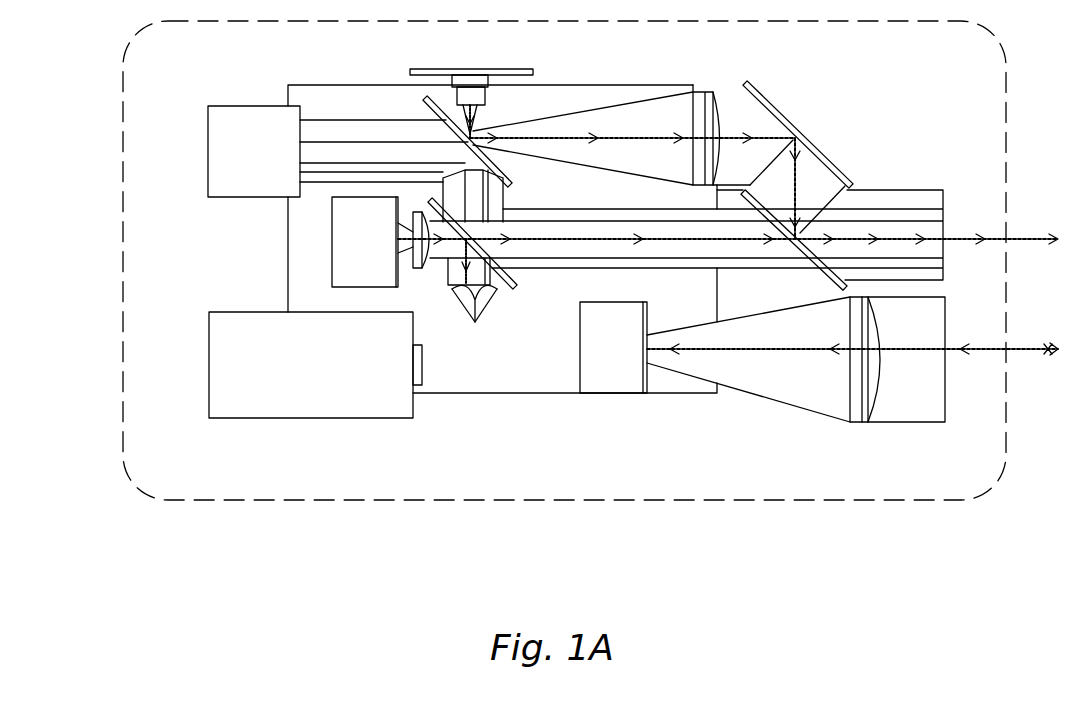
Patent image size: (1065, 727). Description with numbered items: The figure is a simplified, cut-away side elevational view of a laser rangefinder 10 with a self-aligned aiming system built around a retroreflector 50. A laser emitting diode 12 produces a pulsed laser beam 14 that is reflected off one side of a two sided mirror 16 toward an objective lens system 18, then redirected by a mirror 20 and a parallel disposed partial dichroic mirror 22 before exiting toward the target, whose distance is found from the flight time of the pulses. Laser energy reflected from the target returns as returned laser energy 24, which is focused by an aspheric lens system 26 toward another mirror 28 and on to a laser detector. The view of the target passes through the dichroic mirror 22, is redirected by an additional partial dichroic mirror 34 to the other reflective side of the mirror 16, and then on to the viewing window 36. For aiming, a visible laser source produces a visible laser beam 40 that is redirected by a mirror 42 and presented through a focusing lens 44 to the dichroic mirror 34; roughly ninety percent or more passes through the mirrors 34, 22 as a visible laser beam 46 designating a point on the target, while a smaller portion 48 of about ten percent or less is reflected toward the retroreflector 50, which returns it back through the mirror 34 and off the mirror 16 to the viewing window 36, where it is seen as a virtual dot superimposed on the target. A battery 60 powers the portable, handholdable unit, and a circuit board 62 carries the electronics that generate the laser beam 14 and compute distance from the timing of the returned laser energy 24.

The laser rangefinder 10 is at (243, 502).
The laser emitting diode 12 is at (488, 95).
The laser beam 14 is at (476, 125).
The two sided mirror 16 is at (512, 178).
The objective lens system 18 is at (712, 92).
The mirror 20 is at (818, 150).
The partial dichroic mirror 22 is at (827, 276).
The returned laser energy 24 is at (763, 351).
The aspheric lens system 26 is at (879, 328).
The mirror 28 is at (580, 352).
The partial dichroic mirror 34 is at (517, 285).
The viewing window 36 is at (235, 110).
The visible laser beam 40 is at (413, 214).
The mirror 42 is at (330, 270).
The focusing lens 44 is at (417, 270).
The visible laser beam 46 is at (663, 235).
The smaller portion of the visible laser beam 48 is at (448, 272).
The retroreflector 50 is at (488, 312).
The battery 60 is at (209, 400).
The circuit board 62 is at (503, 393).